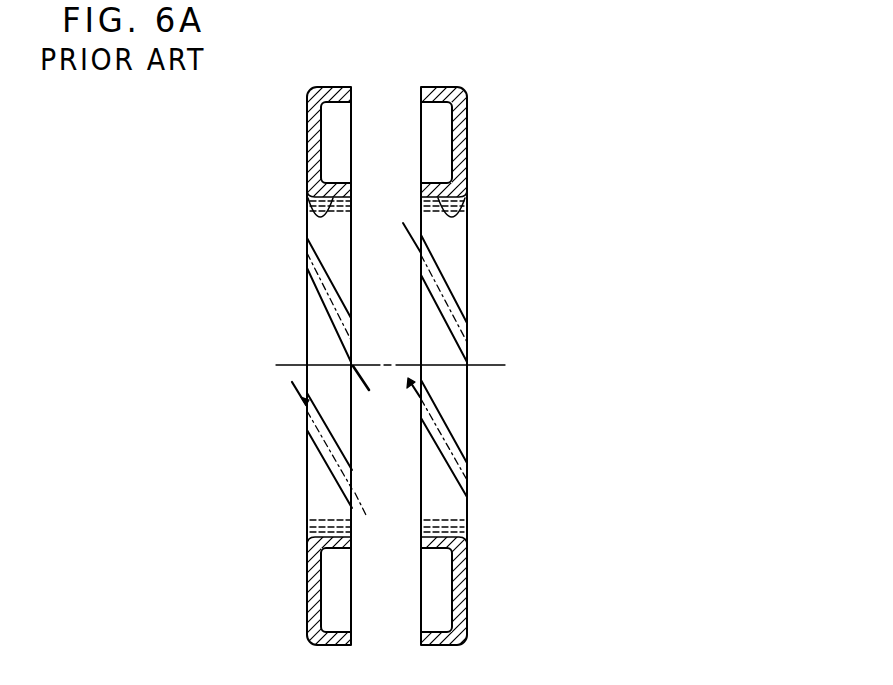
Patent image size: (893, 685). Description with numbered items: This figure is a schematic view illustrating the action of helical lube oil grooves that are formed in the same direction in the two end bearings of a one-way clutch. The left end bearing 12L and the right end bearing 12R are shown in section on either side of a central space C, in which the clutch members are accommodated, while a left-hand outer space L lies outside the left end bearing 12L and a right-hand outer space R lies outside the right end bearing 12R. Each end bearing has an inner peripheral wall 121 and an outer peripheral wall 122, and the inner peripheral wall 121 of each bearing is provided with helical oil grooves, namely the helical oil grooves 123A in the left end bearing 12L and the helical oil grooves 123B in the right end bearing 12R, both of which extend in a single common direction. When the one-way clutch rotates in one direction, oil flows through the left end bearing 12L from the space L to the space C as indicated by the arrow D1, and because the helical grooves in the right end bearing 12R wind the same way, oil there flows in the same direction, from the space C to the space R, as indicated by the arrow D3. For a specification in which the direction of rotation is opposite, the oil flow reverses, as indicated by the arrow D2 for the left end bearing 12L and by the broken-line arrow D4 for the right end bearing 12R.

The left end bearing 12L is at (309, 93).
The right end bearing 12R is at (467, 100).
The central space C is at (384, 128).
The inner peripheral wall 121 is at (307, 207).
The outer peripheral wall 122 is at (333, 646).
The helical oil grooves 123A is at (307, 453).
The helical oil grooves 123B is at (467, 447).
The arrow D1 is at (307, 238).
The arrow D2 is at (288, 396).
The arrow D3 is at (468, 365).
The broken-line arrow D4 is at (469, 493).
The left-hand outer space L is at (327, 365).
The right-hand outer space R is at (463, 367).